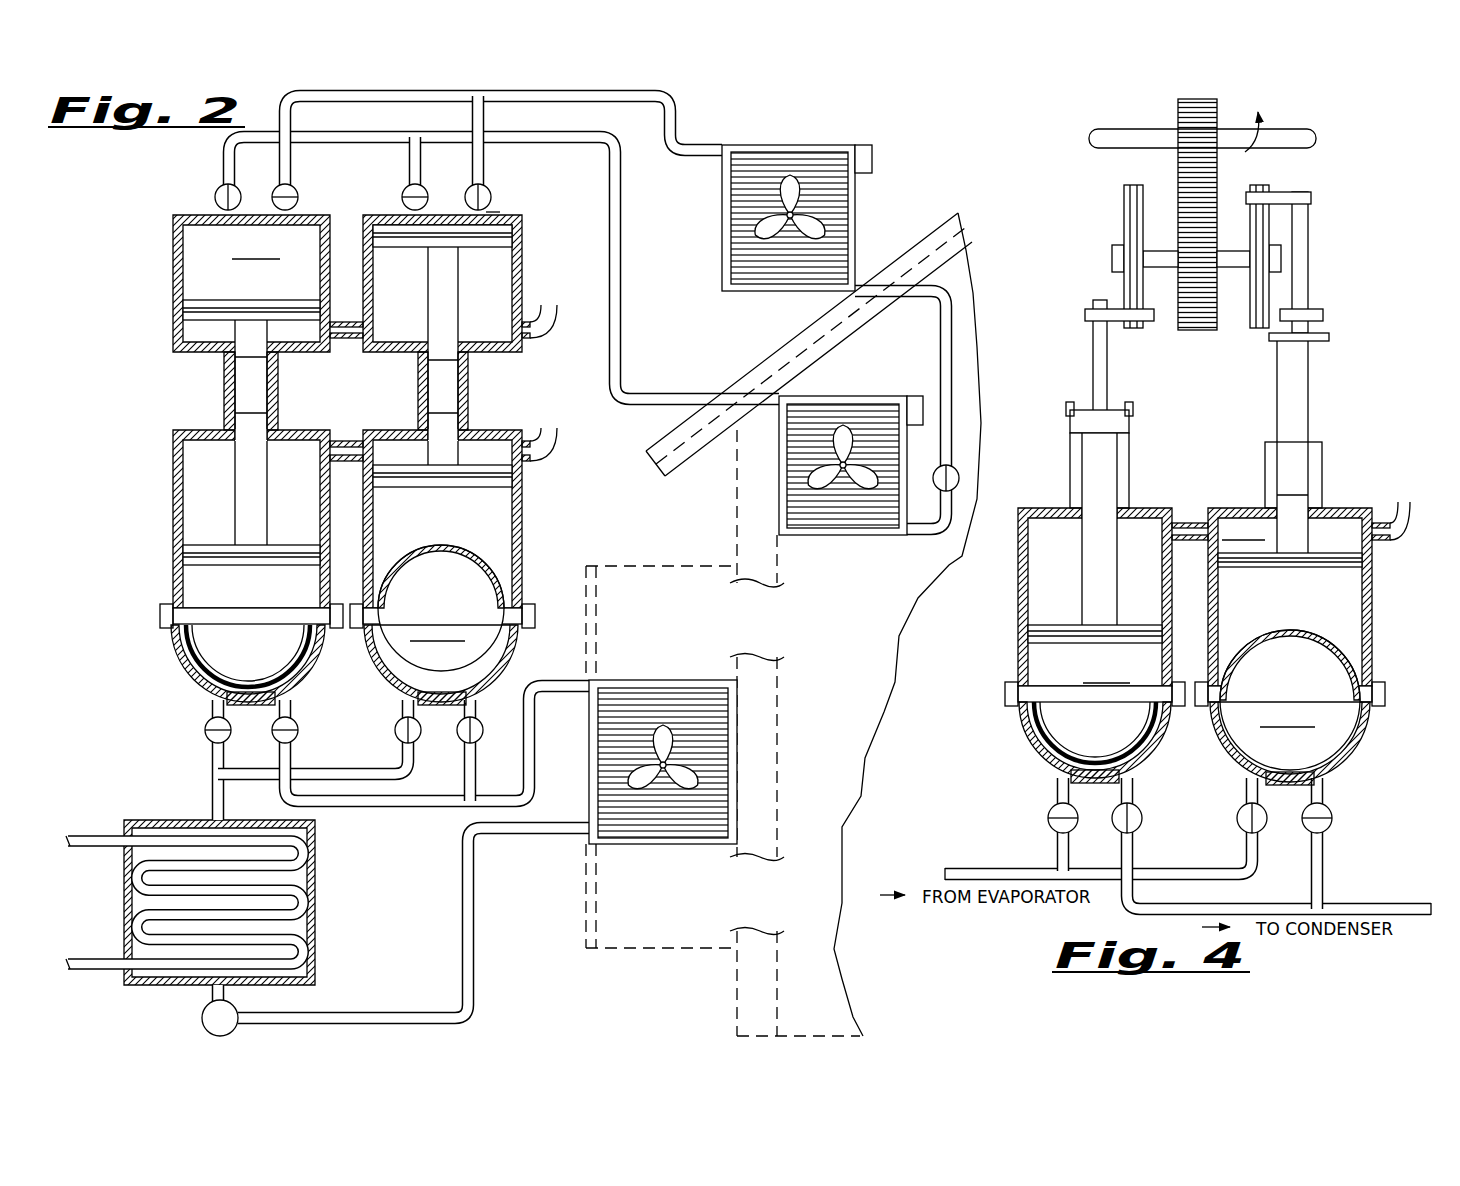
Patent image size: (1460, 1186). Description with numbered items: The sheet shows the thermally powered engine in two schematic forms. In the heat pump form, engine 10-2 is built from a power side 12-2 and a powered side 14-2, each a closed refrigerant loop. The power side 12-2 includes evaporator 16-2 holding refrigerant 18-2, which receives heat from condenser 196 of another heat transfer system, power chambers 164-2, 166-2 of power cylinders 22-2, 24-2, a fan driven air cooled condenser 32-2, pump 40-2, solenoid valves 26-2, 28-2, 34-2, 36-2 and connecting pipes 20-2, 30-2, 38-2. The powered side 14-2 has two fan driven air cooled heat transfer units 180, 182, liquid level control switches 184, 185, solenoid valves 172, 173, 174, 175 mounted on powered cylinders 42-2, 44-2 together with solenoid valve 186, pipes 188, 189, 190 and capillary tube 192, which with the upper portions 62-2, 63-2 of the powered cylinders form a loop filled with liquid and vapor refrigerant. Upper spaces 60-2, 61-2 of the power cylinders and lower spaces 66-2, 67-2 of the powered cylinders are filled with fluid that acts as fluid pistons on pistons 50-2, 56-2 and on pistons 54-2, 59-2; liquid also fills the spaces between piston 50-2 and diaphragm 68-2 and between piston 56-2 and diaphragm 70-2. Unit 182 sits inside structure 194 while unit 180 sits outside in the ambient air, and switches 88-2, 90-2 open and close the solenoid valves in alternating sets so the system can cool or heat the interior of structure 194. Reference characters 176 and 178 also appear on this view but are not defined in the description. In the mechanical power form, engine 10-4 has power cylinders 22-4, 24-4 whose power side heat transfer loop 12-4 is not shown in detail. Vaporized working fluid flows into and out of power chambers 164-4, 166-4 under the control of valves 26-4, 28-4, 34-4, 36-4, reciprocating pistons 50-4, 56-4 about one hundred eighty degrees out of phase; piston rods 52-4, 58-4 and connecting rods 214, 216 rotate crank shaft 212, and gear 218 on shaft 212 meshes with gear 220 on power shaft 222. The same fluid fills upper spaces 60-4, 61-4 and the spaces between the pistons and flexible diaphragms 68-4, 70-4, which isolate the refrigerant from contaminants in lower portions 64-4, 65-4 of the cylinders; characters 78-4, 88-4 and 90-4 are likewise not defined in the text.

In FIG. 2, the engine 10-2 is at (326, 460).
In FIG. 2, the power side 12-2 is at (316, 545).
In FIG. 2, the powered side 14-2 is at (331, 380).
In FIG. 2, the evaporator 16-2 is at (140, 820).
In FIG. 2, the refrigerant 18-2 is at (221, 902).
In FIG. 2, the connecting pipe 20-2 is at (212, 772).
In FIG. 2, the power cylinder 22-2 is at (180, 575).
In FIG. 2, the power cylinder 24-2 is at (522, 480).
In FIG. 2, the solenoid valve 26-2 is at (206, 735).
In FIG. 2, the solenoid valve 28-2 is at (297, 735).
In FIG. 2, the connecting pipe 30-2 is at (437, 760).
In FIG. 2, the condenser 32-2 is at (587, 727).
In FIG. 2, the solenoid valve 34-2 is at (396, 728).
In FIG. 2, the solenoid valve 36-2 is at (457, 735).
In FIG. 2, the connecting pipe 38-2 is at (348, 1012).
In FIG. 2, the pump 40-2 is at (367, 932).
In FIG. 2, the powered cylinder 42-2 is at (173, 253).
In FIG. 2, the powered cylinder 44-2 is at (522, 262).
In FIG. 2, the piston 50-2 is at (222, 572).
In FIG. 2, the piston 54-2 is at (258, 300).
In FIG. 2, the piston 56-2 is at (468, 490).
In FIG. 2, the piston 59-2 is at (400, 250).
In FIG. 2, the upper space 60-2 is at (212, 518).
In FIG. 2, the upper space 61-2 is at (395, 445).
In FIG. 2, the upper portion 62-2 is at (256, 249).
In FIG. 2, the upper portion 63-2 is at (512, 232).
In FIG. 2, the lower space 66-2 is at (195, 330).
In FIG. 2, the lower space 67-2 is at (400, 335).
In FIG. 2, the diaphragm 68-2 is at (248, 661).
In FIG. 2, the diaphragm 70-2 is at (403, 565).
In FIG. 2, the switch 88-2 is at (178, 685).
In FIG. 2, the switch 90-2 is at (440, 690).
In FIG. 2, the power chamber 164-2 is at (225, 661).
In FIG. 2, the power chamber 166-2 is at (441, 625).
In FIG. 2, the solenoid valve 172 is at (222, 186).
In FIG. 2, the solenoid valve 173 is at (296, 190).
In FIG. 2, the solenoid valve 174 is at (406, 188).
In FIG. 2, the solenoid valve 175 is at (486, 192).
In FIG. 2, the heat exchange circuit 176 is at (327, 868).
In FIG. 2, the enclosure 178 is at (783, 586).
In FIG. 2, the air cooled heat transfer unit 180 is at (808, 333).
In FIG. 2, the air cooled heat transfer unit 182 is at (851, 449).
In FIG. 2, the liquid level control switch 184 is at (872, 160).
In FIG. 2, the liquid level control switch 185 is at (913, 396).
In FIG. 2, the solenoid valve 186 is at (952, 492).
In FIG. 2, the pipe 188 is at (525, 103).
In FIG. 2, the pipe 189 is at (880, 280).
In FIG. 2, the pipe 190 is at (535, 143).
In FIG. 2, the capillary tube 192 is at (492, 212).
In FIG. 2, the structure 194 is at (723, 733).
In FIG. 2, the condenser 196 is at (124, 905).
In FIG. 4, the thermally powered engine 10-4 is at (1195, 442).
In FIG. 4, the power side closed heat transfer loop 12-4 is at (1347, 897).
In FIG. 4, the power cylinder 22-4 is at (1018, 640).
In FIG. 4, the power cylinder 24-4 is at (1321, 594).
In FIG. 4, the valve 26-4 is at (1047, 818).
In FIG. 4, the valve 28-4 is at (1143, 818).
In FIG. 4, the valve 34-4 is at (1237, 815).
In FIG. 4, the valve 36-4 is at (1333, 818).
In FIG. 4, the piston 50-4 is at (1095, 643).
In FIG. 4, the piston rod 52-4 is at (1082, 455).
In FIG. 4, the piston 56-4 is at (1285, 567).
In FIG. 4, the piston rod 58-4 is at (1316, 405).
In FIG. 4, the upper space 60-4 is at (1060, 596).
In FIG. 4, the upper space 61-4 is at (1243, 530).
In FIG. 4, the lower portion 64-4 is at (1106, 673).
In FIG. 4, the lower portion 65-4 is at (1368, 600).
In FIG. 4, the flexible diaphragm 68-4 is at (1079, 750).
In FIG. 4, the flexible diaphragm 70-4 is at (1260, 630).
In FIG. 4, the passage 78-4 is at (1185, 523).
In FIG. 4, the diaphragm 88-4 is at (1075, 782).
In FIG. 4, the port 90-4 is at (1283, 772).
In FIG. 4, the power chamber 164-4 is at (1060, 750).
In FIG. 4, the power chamber 166-4 is at (1290, 688).
In FIG. 4, the crank shaft 212 is at (1232, 270).
In FIG. 4, the connecting rod 214 is at (1308, 222).
In FIG. 4, the connecting rod 216 is at (1093, 330).
In FIG. 4, the gear 218 is at (1170, 318).
In FIG. 4, the gear 220 is at (1217, 108).
In FIG. 4, the power shaft 222 is at (1300, 130).